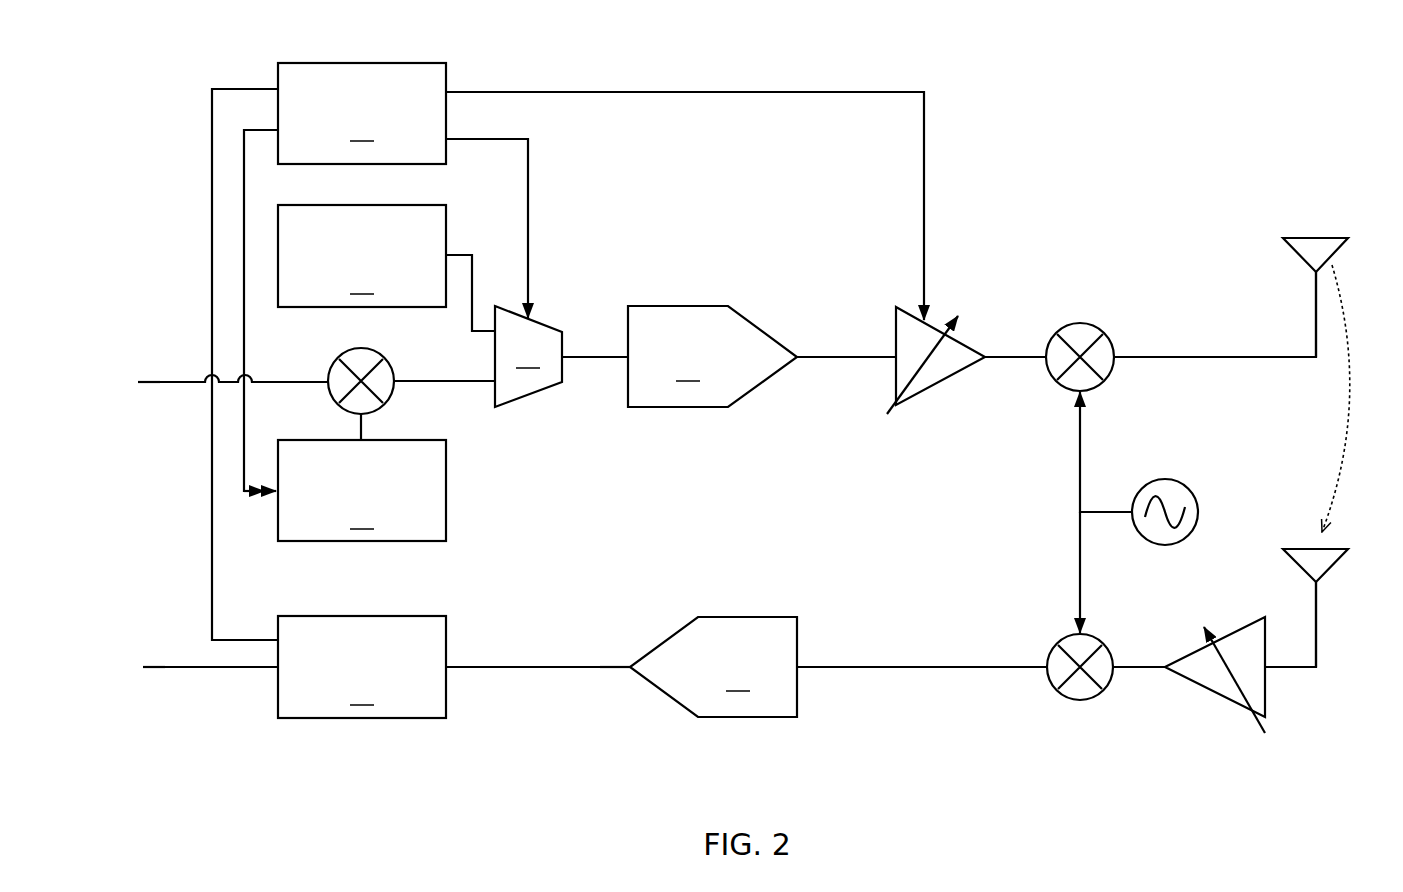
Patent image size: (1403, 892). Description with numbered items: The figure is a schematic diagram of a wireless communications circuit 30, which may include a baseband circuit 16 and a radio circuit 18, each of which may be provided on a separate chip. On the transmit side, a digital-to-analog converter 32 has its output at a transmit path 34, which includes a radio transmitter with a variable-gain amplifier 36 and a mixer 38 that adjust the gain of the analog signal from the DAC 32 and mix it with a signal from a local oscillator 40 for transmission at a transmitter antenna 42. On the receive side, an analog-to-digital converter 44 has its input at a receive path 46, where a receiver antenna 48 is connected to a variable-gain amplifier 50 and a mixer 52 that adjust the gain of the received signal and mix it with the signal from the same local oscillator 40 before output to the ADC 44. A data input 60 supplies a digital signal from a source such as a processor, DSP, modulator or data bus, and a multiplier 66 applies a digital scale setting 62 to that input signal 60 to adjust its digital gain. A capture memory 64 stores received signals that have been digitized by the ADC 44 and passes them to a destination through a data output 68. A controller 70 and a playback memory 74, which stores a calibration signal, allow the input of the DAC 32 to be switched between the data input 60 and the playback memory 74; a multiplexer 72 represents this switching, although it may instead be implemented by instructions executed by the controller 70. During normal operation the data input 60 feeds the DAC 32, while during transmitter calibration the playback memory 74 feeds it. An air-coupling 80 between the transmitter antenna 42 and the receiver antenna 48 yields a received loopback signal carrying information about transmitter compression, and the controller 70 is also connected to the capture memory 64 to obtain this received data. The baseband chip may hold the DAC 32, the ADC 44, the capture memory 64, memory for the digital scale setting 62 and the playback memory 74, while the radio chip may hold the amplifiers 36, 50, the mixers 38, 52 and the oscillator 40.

The baseband circuit 16 is at (632, 730).
The radio circuit 18 is at (955, 734).
The wireless communications circuit 30 is at (943, 57).
The digital-to-analog converter 32 is at (712, 356).
The transmit path 34 is at (1030, 265).
The variable-gain amplifier 36 is at (937, 378).
The mixer 38 is at (1080, 322).
The local oscillator 40 is at (1157, 478).
The transmitter antenna 42 is at (1252, 215).
The analog-to-digital converter 44 is at (713, 667).
The receive path 46 is at (1154, 712).
The receiver antenna 48 is at (1278, 513).
The variable-gain amplifier 50 is at (1210, 693).
The mixer 52 is at (1077, 700).
The data input 60 is at (157, 368).
The digital scale setting 62 is at (362, 490).
The capture memory 64 is at (362, 667).
The multiplier 66 is at (390, 400).
The data output 68 is at (160, 653).
The controller 70 is at (362, 113).
The multiplexer 72 is at (528, 356).
The playback memory 74 is at (362, 256).
The air-coupling 80 is at (1336, 398).